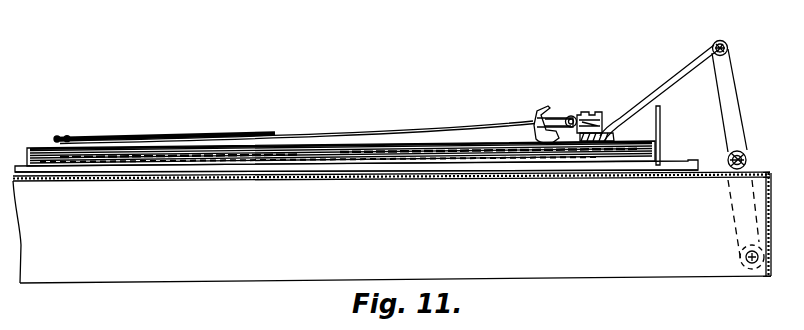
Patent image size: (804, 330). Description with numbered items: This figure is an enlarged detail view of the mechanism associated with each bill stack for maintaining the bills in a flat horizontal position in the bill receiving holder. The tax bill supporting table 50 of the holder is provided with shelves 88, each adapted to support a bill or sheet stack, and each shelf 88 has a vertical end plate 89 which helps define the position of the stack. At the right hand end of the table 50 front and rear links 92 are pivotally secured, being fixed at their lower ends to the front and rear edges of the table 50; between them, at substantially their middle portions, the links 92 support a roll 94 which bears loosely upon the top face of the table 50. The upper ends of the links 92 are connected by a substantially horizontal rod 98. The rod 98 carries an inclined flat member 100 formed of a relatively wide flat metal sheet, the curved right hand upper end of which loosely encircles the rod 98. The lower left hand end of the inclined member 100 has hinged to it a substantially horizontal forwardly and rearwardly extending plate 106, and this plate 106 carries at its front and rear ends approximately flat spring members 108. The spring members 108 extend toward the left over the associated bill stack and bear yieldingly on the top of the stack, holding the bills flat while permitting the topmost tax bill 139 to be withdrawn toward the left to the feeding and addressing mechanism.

The tax bill supporting table 50 is at (120, 182).
The shelf 88 is at (600, 162).
The vertical end plate 89 is at (662, 122).
The link 92 is at (737, 104).
The roll 94 is at (752, 146).
The rod 98 is at (731, 38).
The inclined flat member 100 is at (672, 71).
The plate 106 is at (563, 119).
The flat spring member 108 is at (463, 124).
The tax bill 139 is at (262, 152).